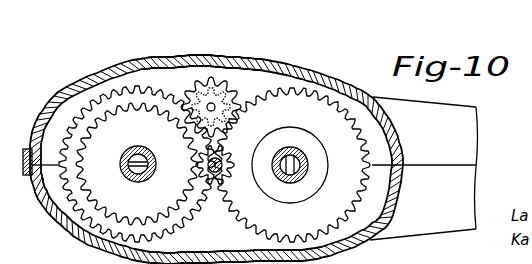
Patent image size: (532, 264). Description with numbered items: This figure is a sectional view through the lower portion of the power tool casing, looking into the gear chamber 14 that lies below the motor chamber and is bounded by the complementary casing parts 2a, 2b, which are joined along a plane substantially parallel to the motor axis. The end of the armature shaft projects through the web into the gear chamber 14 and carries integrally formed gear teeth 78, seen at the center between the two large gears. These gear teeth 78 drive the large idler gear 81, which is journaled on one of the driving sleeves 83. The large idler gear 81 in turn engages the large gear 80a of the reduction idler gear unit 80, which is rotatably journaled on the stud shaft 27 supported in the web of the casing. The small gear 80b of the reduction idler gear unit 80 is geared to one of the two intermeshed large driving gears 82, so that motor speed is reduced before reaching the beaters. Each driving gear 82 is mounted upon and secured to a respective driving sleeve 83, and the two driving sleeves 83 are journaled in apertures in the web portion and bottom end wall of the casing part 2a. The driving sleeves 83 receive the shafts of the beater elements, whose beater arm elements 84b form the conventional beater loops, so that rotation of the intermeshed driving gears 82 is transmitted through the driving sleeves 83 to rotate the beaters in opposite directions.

The gear chamber 14 is at (349, 100).
The large driving gears 82 is at (145, 87).
The large idler gear 81 is at (183, 205).
The beater arm elements 84b is at (138, 150).
The driving sleeves 83 is at (157, 165).
The gear teeth 78 is at (226, 160).
The reduction idler gear unit 80 is at (234, 85).
The large gear 80a is at (208, 77).
The small gear 80b is at (198, 78).
The stud shaft 27 is at (220, 109).
The casing part 2a is at (479, 105).
The casing part 2b is at (468, 190).